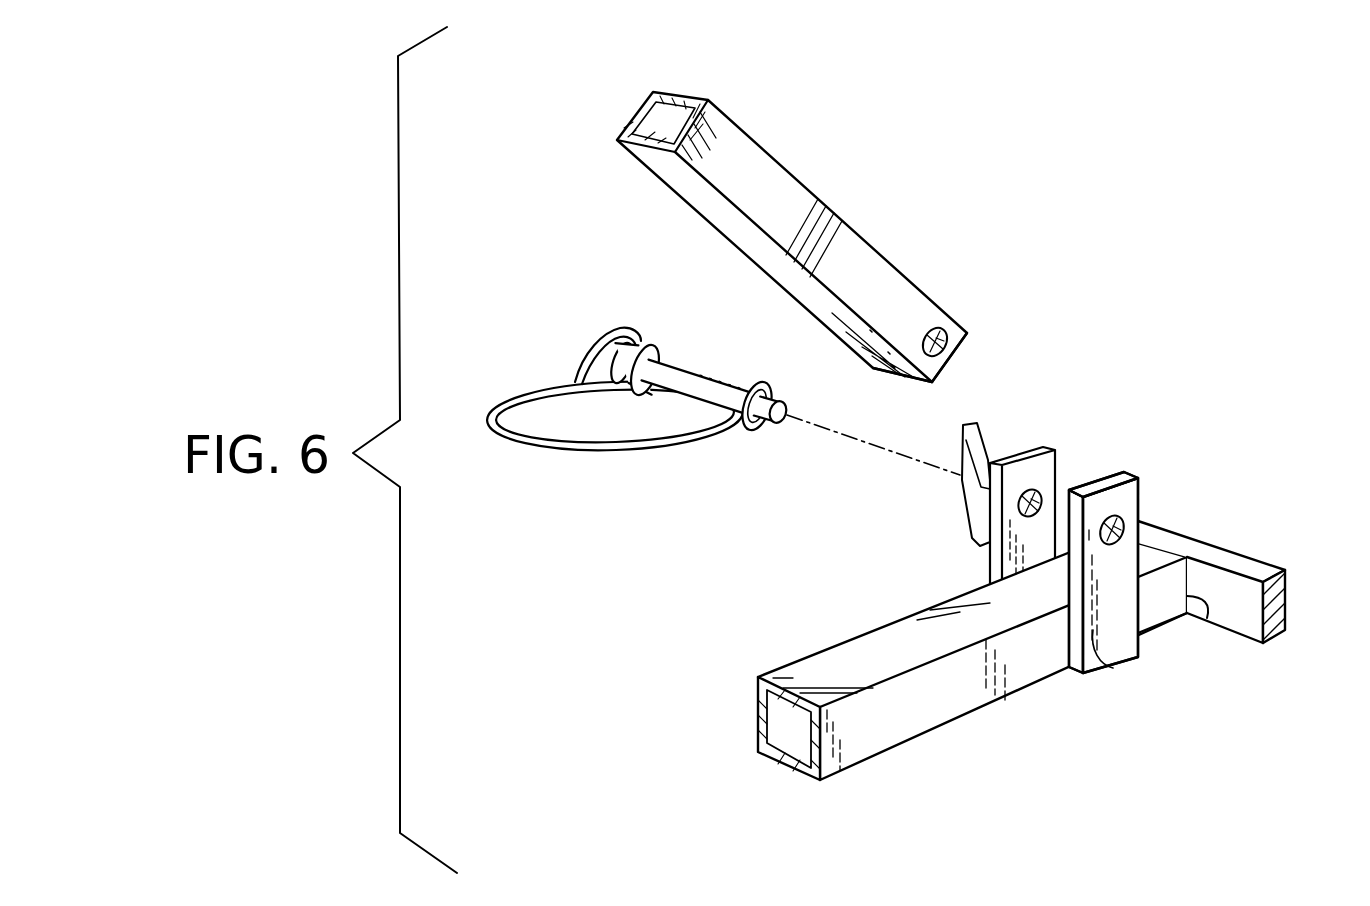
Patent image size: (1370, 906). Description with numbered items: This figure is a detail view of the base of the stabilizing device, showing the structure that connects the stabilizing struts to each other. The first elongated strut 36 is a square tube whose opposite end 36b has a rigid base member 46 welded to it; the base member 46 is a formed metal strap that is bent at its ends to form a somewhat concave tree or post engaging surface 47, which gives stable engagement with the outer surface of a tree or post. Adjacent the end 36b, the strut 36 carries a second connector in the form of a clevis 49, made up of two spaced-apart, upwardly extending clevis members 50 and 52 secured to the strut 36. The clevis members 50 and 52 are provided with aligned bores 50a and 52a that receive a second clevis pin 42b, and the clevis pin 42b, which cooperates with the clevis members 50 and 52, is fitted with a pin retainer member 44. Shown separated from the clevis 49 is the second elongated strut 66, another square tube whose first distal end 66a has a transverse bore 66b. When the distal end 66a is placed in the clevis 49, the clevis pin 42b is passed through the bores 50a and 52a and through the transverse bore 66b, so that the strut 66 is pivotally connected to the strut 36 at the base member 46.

The strut 36 is at (846, 635).
The opposite end of the strut 36b is at (1207, 617).
The second clevis pin 42b is at (685, 371).
The pin retainer member 44 is at (587, 452).
The base member 46 is at (1187, 532).
The tree or post engaging surface 47 is at (1280, 607).
The clevis 49 is at (1125, 585).
The clevis member 50 is at (990, 560).
The bore 50a is at (1032, 511).
The clevis member 52 is at (1112, 670).
The bore 52a is at (1118, 544).
The second elongated strut 66 is at (880, 245).
The first distal end 66a is at (913, 379).
The transverse bore 66b is at (947, 350).